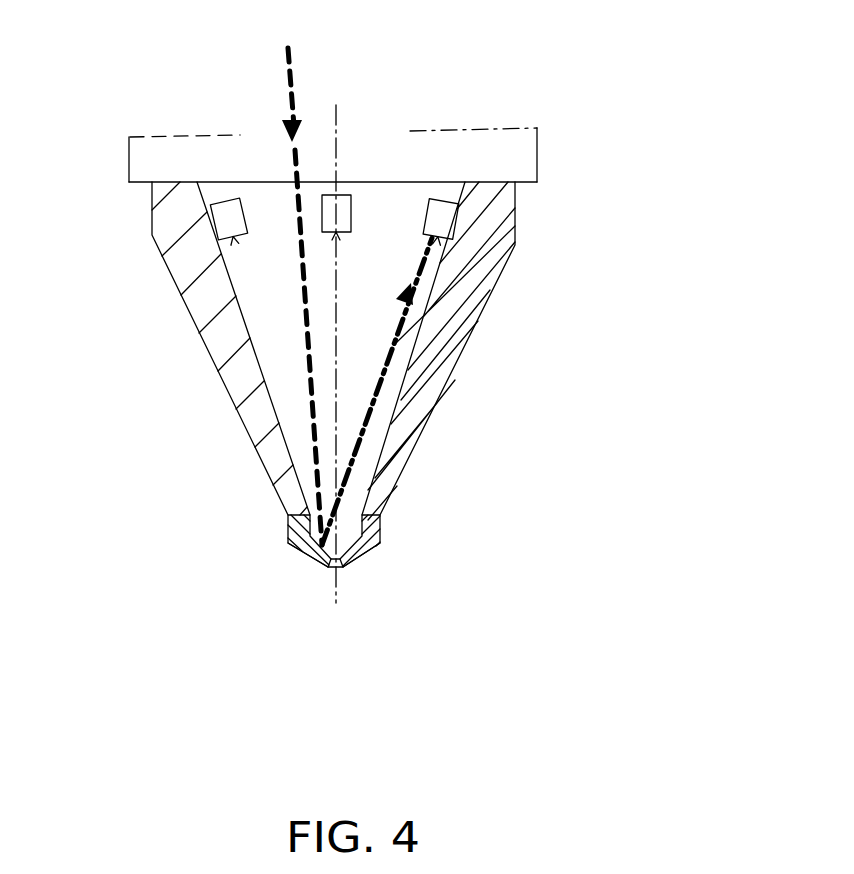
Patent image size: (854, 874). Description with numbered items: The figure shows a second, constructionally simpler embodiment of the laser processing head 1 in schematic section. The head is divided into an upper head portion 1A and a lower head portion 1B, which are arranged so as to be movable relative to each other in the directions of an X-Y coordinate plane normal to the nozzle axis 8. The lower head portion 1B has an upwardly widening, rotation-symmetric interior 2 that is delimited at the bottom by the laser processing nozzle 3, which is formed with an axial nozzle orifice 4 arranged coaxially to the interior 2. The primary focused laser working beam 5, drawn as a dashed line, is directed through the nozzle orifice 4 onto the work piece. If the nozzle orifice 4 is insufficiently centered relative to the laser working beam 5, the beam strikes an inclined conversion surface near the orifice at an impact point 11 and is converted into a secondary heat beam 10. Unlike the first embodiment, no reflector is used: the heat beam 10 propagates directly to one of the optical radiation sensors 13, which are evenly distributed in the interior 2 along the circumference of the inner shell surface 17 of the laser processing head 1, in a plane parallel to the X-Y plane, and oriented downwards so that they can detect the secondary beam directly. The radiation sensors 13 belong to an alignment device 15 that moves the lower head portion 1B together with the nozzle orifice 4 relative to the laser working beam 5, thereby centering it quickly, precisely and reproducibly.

The laser processing head 1 is at (171, 109).
The upper head portion 1A is at (475, 130).
The lower head portion 1B is at (488, 406).
The interior 2 is at (347, 291).
The laser processing nozzle 3 is at (377, 547).
The nozzle orifice 4 is at (348, 570).
The laser working beam 5 is at (290, 72).
The nozzle axis 8 is at (333, 575).
The heat beam 10 is at (370, 408).
The impact point 11 is at (302, 545).
The radiation sensors 13 is at (440, 217).
The alignment device 15 is at (571, 193).
The inner shell surface 17 is at (236, 281).